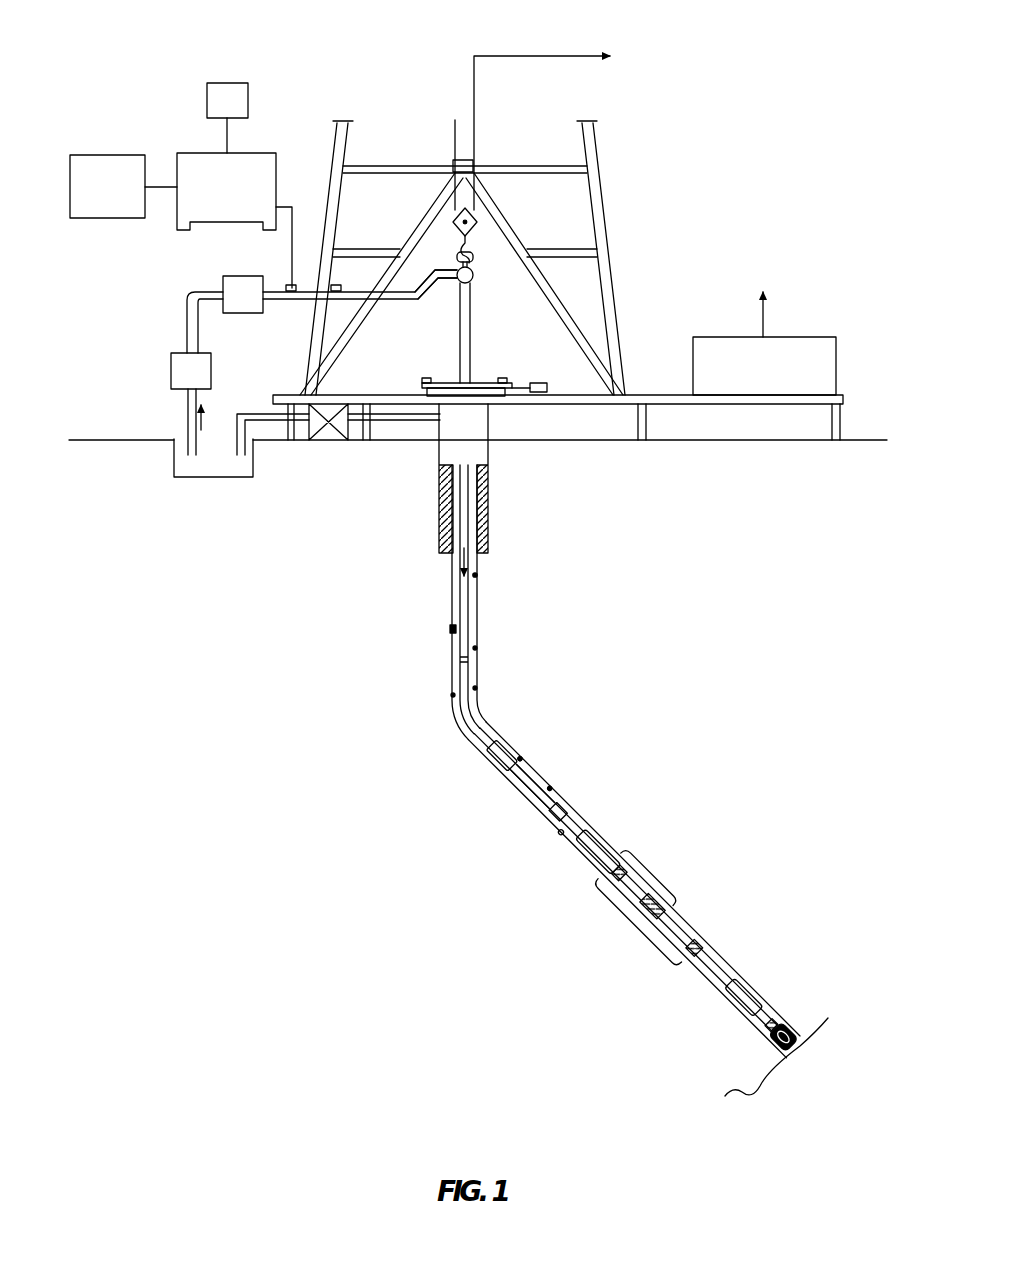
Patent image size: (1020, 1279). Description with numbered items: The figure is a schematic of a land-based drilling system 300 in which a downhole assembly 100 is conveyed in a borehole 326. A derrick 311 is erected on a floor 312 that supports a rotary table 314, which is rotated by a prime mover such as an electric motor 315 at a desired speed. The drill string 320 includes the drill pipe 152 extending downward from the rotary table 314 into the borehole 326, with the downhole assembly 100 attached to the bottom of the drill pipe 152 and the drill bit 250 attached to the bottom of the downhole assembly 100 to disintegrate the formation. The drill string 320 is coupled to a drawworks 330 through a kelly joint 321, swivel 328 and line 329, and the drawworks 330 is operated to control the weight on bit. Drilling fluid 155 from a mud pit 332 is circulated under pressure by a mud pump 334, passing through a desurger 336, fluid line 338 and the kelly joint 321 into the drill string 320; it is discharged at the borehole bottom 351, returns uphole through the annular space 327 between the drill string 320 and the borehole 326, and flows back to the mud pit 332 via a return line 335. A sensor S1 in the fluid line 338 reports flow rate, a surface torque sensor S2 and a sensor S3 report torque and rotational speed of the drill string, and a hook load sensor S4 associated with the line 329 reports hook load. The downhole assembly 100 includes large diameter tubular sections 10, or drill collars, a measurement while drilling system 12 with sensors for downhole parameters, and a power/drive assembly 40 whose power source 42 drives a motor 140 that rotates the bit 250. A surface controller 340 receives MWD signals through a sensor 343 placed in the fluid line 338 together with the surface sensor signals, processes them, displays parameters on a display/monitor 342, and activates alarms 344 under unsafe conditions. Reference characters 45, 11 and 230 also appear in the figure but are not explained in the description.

The drilling system 300 is at (366, 55).
The display/monitor 342 is at (210, 83).
The surface controller 340 is at (191, 153).
The alarms 344 is at (102, 218).
The communication line 45 is at (287, 206).
The desurger 336 is at (223, 280).
The sensor 343 is at (290, 284).
The fluid line 338 is at (281, 302).
The mud pump 334 is at (171, 371).
The drilling fluid 155 is at (178, 465).
The mud pit 332 is at (241, 474).
The floor 312 is at (658, 395).
The return line 335 is at (388, 419).
The derrick 311 is at (611, 241).
The line 329 is at (477, 103).
The hook load sensor S4 is at (476, 224).
The kelly joint 321 is at (471, 306).
The swivel 328 is at (451, 285).
The rotary table 314 is at (488, 381).
The sensor S3 is at (426, 378).
The surface torque sensor S2 is at (504, 378).
The sensor S1 is at (337, 285).
The electric motor 315 is at (537, 394).
The drawworks 330 is at (830, 337).
The borehole 326 is at (449, 586).
The drill pipe 152 is at (478, 576).
The annular space 327 is at (452, 640).
The drill string 320 is at (460, 678).
The large diameter tubular sections 10 is at (497, 773).
The drill pipe 11 is at (520, 801).
The measurement while drilling system 12 is at (557, 836).
The sensors 230 is at (521, 763).
The power source 42 is at (658, 872).
The motor 140 is at (690, 927).
The power/drive assembly 40 is at (677, 966).
The drill bit 250 is at (798, 1018).
The borehole bottom 351 is at (728, 1095).
The downhole assembly 100 is at (680, 788).